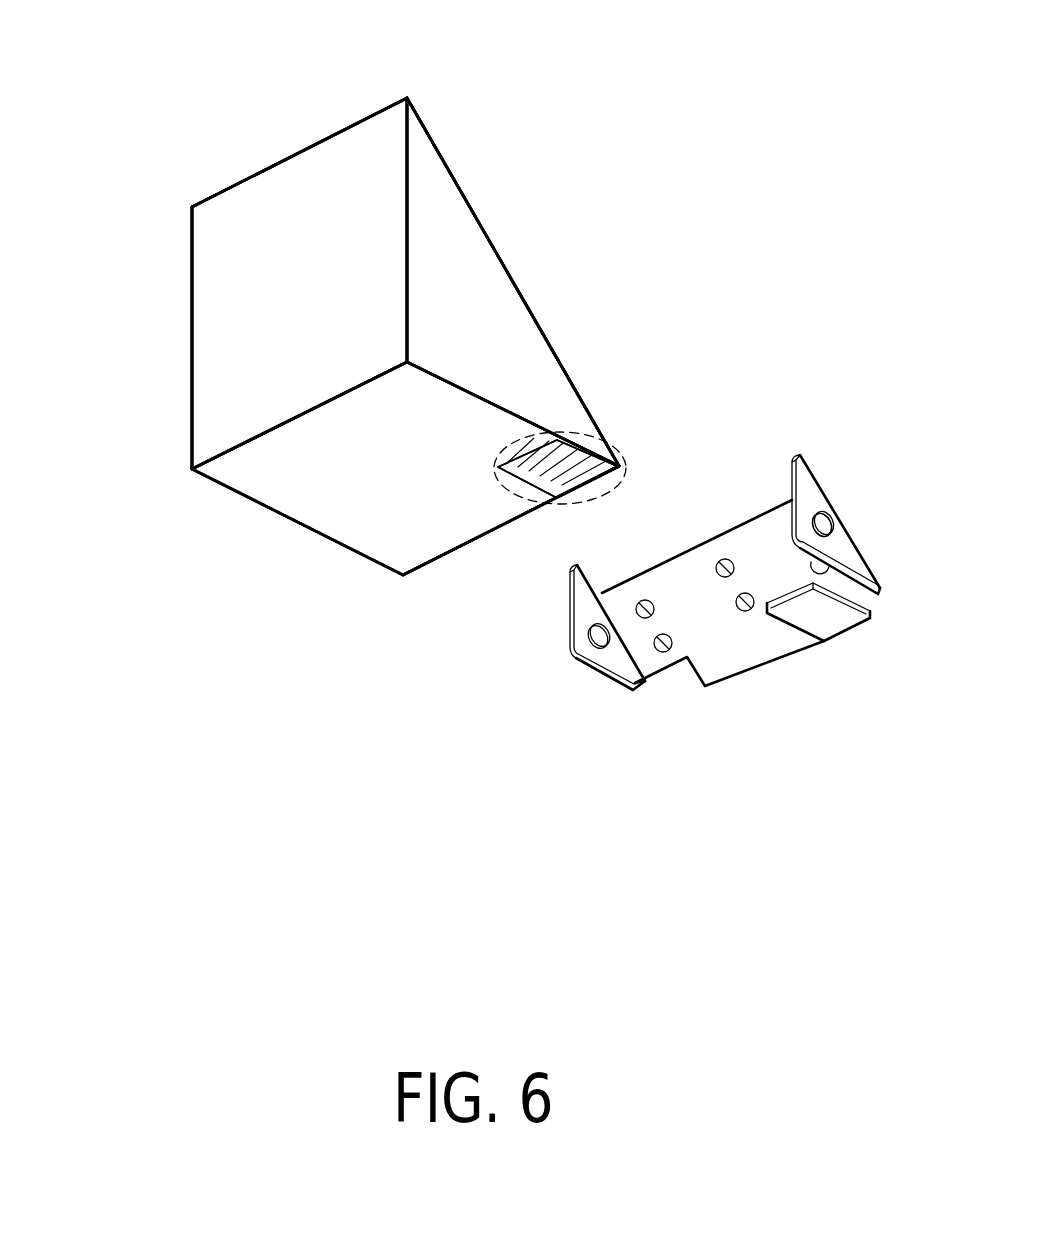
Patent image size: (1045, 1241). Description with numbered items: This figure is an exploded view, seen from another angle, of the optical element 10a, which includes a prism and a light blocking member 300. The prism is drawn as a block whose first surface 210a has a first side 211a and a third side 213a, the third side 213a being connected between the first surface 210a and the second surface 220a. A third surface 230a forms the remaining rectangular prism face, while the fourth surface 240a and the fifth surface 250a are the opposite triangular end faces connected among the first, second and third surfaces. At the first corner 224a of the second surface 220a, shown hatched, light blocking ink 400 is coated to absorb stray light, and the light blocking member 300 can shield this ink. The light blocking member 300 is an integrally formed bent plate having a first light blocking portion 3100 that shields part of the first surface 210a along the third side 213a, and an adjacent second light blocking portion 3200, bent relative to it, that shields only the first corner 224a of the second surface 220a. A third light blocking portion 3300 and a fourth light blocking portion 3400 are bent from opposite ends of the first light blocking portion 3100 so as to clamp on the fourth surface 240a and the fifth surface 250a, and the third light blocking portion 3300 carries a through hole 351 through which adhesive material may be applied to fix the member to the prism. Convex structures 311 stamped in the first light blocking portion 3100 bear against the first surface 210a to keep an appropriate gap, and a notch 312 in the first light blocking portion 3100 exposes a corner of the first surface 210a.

The optical element 10a is at (193, 58).
The first surface 210a is at (472, 203).
The first side 211a is at (515, 278).
The third side 213a is at (480, 540).
The second surface 220a is at (363, 510).
The first corner 224a is at (533, 445).
The third surface 230a is at (227, 313).
The fourth surface 240a is at (508, 350).
The fifth surface 250a is at (192, 250).
The light blocking member 300 is at (415, 723).
The convex structures 311 is at (725, 559).
The notch 312 is at (675, 673).
The through hole 351 is at (830, 525).
The light blocking ink 400 is at (595, 482).
The first light blocking portion 3100 is at (726, 655).
The second light blocking portion 3200 is at (822, 622).
The third light blocking portion 3300 is at (832, 568).
The fourth light blocking portion 3400 is at (587, 667).